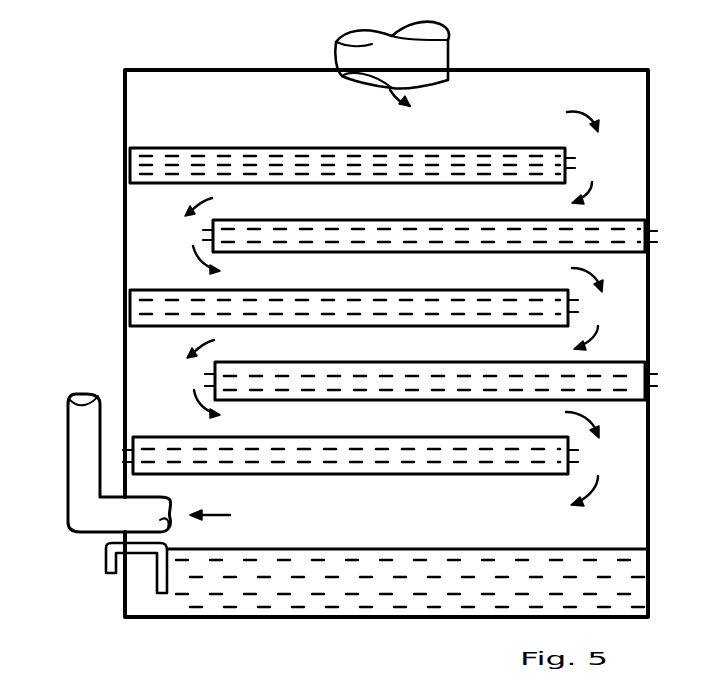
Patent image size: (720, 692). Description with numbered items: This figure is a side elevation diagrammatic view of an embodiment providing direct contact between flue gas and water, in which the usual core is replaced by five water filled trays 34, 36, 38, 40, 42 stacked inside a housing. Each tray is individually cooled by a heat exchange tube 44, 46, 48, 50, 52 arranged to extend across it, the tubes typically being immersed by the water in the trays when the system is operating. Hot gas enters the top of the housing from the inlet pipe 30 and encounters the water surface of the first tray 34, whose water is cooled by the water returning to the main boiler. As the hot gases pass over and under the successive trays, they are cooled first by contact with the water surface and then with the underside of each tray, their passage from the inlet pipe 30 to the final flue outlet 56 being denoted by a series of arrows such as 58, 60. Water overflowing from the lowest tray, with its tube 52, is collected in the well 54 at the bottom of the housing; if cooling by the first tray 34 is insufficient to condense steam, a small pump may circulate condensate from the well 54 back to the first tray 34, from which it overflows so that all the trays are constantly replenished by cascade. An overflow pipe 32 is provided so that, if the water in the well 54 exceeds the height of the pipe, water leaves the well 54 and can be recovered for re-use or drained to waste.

The inlet pipe 30 is at (452, 44).
The overflow pipe 32 is at (104, 570).
The first tray 34 is at (190, 148).
The water filled tray 36 is at (292, 220).
The water filled tray 38 is at (296, 290).
The water filled tray 40 is at (286, 362).
The water filled tray 42 is at (298, 437).
The heat exchange tube 44 is at (100, 183).
The heat exchange tube 46 is at (177, 256).
The heat exchange tube 48 is at (100, 318).
The heat exchange tube 50 is at (179, 391).
The heat exchange tube 52 is at (158, 430).
The well 54 is at (404, 596).
The final flue outlet 56 is at (68, 444).
The arrow 58 is at (606, 98).
The arrow 60 is at (588, 494).